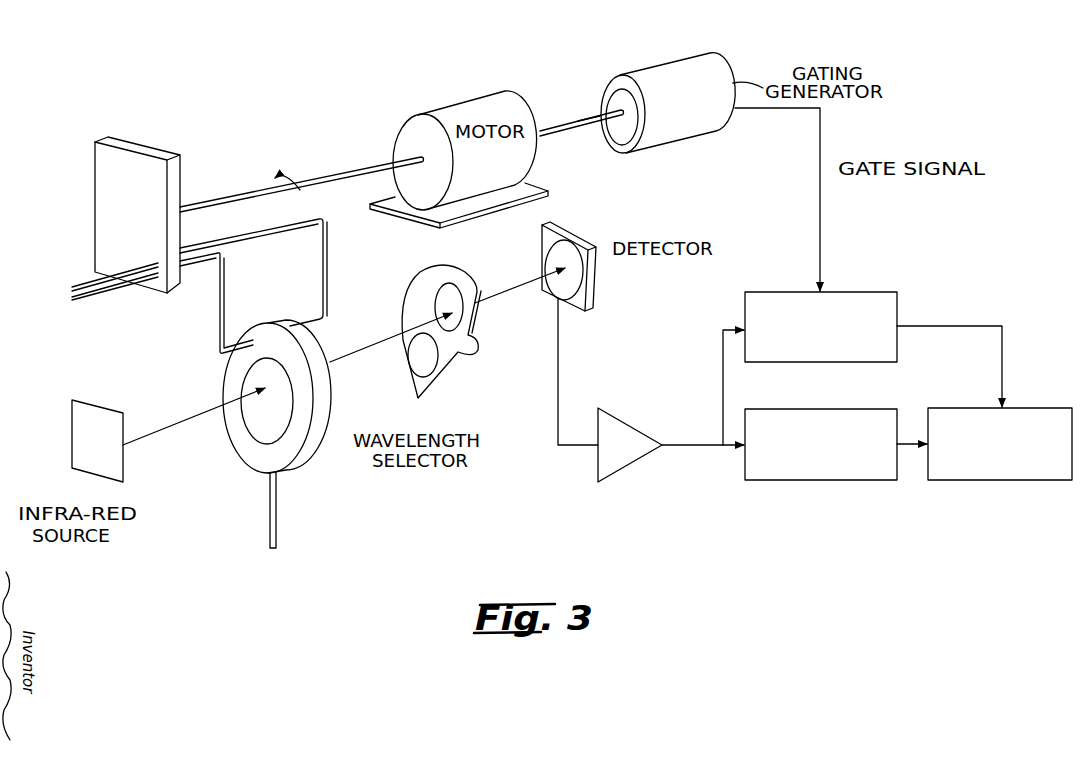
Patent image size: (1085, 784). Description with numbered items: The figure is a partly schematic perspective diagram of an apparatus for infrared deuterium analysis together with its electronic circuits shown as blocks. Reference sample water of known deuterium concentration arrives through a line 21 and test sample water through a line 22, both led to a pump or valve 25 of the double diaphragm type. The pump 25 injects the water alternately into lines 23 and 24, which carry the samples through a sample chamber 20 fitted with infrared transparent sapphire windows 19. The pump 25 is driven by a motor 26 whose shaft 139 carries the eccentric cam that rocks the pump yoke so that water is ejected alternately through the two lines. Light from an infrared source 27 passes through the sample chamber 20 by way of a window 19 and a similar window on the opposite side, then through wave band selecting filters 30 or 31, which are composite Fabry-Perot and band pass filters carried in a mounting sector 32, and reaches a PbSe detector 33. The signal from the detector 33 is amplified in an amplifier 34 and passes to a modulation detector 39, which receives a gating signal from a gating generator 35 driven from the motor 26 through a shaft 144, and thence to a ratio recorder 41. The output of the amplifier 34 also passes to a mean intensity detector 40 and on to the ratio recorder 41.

The infrared transparent window 19 is at (253, 422).
The sample chamber 20 is at (323, 440).
The line 21 is at (83, 280).
The line 22 is at (118, 295).
The line 23 is at (294, 232).
The line 24 is at (219, 313).
The pump or valve 25 is at (135, 163).
The motor 26 is at (541, 121).
The infrared source 27 is at (97, 477).
The wave band selecting filter 30 is at (420, 356).
The wave band selecting filter 31 is at (453, 298).
The mounting sector 32 is at (402, 311).
The PbSe detector 33 is at (595, 278).
The amplifier 34 is at (645, 458).
The gating generator 35 is at (700, 134).
The modulation detector 39 is at (863, 291).
The mean intensity detector 40 is at (772, 483).
The ratio recorder 41 is at (968, 482).
The shaft 139 is at (345, 170).
The shaft 144 is at (588, 127).